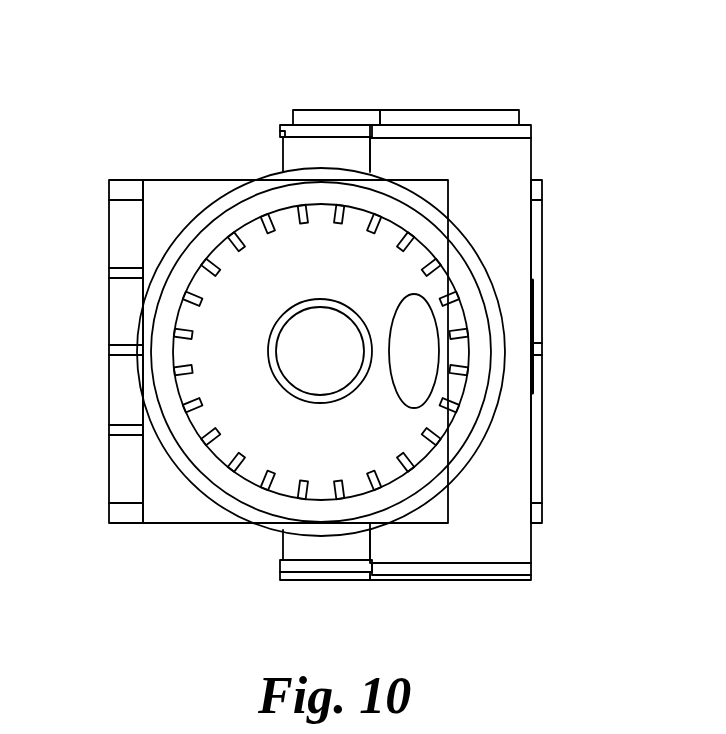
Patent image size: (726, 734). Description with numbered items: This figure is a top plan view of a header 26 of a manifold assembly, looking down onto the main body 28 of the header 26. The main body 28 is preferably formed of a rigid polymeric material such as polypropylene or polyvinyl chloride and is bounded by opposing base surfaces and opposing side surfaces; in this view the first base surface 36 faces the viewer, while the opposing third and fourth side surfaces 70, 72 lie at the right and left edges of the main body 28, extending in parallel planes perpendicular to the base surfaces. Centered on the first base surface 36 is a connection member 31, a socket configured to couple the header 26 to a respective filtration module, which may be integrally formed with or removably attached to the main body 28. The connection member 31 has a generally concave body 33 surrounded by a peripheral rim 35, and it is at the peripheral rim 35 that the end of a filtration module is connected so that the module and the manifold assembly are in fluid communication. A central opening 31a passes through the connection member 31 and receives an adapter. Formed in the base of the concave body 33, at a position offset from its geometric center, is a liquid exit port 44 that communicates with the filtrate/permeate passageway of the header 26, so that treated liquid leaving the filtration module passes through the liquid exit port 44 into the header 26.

The header 26 is at (603, 70).
The main body 28 is at (515, 537).
The connection member 31 is at (388, 230).
The central opening 31a is at (298, 388).
The concave body 33 is at (303, 248).
The peripheral rim 35 is at (247, 193).
The first base surface 36 is at (183, 200).
The liquid exit port 44 is at (418, 332).
The third side surface 70 is at (533, 293).
The fourth side surface 72 is at (108, 322).